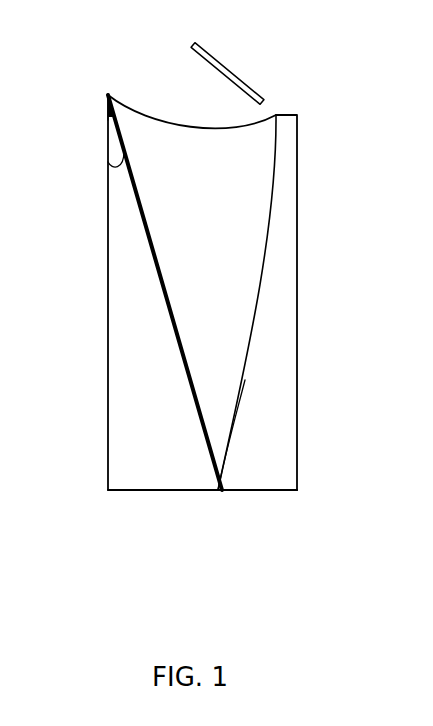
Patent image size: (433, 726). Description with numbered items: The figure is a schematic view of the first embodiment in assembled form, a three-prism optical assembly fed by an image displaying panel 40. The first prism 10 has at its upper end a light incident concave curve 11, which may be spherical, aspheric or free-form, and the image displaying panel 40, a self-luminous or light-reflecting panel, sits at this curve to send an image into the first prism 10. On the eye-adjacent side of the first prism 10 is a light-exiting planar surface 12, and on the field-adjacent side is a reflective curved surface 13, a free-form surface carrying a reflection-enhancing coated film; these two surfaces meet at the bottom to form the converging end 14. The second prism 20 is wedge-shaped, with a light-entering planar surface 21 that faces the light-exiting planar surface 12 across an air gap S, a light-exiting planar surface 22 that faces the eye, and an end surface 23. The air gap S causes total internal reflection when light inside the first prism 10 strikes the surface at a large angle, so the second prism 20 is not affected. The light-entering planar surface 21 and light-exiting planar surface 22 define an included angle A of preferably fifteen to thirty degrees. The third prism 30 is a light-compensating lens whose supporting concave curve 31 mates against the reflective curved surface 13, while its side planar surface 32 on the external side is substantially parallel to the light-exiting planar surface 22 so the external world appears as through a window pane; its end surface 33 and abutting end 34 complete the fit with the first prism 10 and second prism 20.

The first prism 10 is at (226, 258).
The light incident concave curve 11 is at (175, 128).
The light-exiting planar surface 12 is at (108, 115).
The reflective curved surface 13 is at (304, 302).
The supporting concave curve 31 is at (276, 175).
The converging end 14 is at (220, 420).
The second prism 20 is at (161, 322).
The light-entering planar surface 21 is at (140, 212).
The light-exiting planar surface 22 is at (108, 320).
The end surface 23 is at (150, 492).
The third prism 30 is at (303, 332).
The side planar surface 32 is at (298, 232).
The end surface 33 is at (272, 492).
The abutting end 34 is at (218, 492).
The image displaying panel 40 is at (233, 77).
The air gap S is at (113, 150).
The included angle A is at (116, 170).